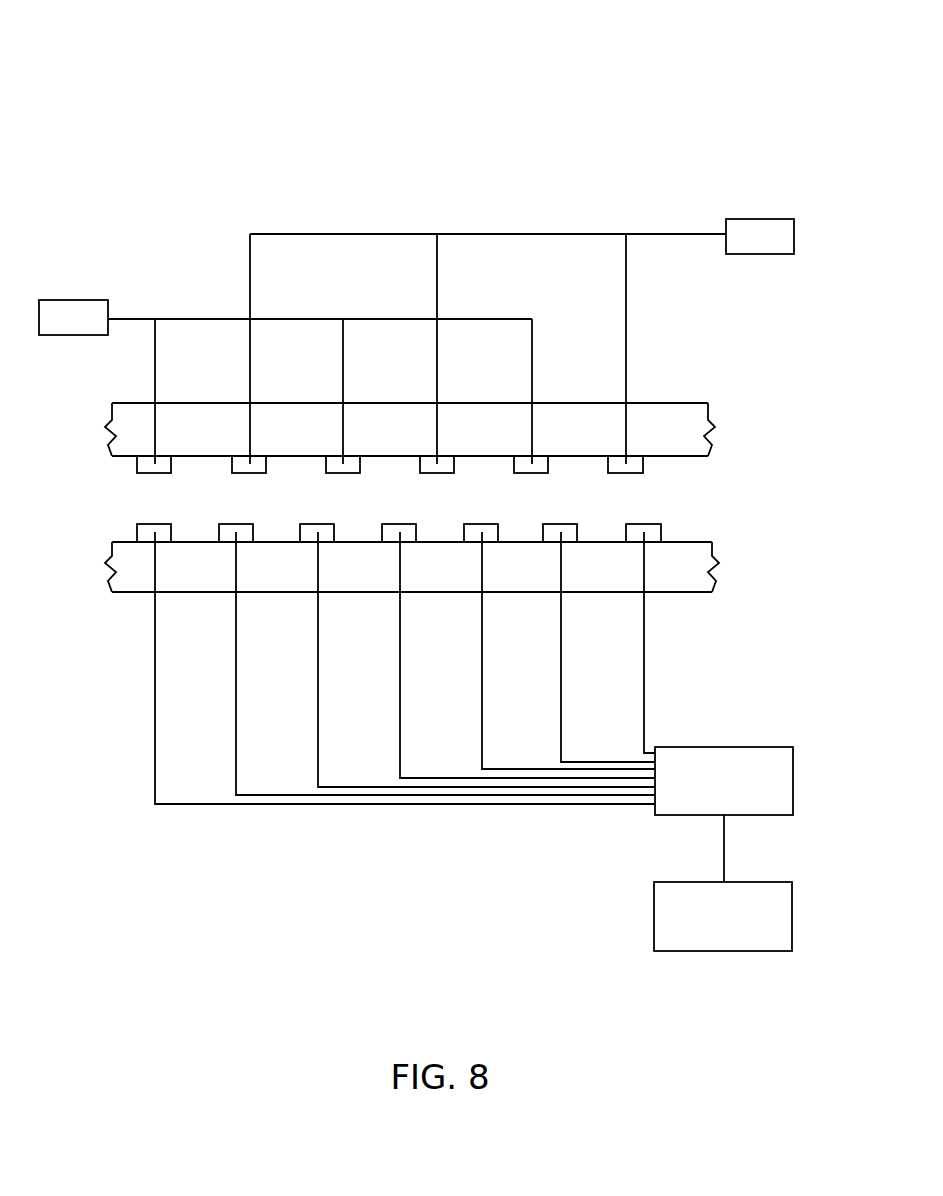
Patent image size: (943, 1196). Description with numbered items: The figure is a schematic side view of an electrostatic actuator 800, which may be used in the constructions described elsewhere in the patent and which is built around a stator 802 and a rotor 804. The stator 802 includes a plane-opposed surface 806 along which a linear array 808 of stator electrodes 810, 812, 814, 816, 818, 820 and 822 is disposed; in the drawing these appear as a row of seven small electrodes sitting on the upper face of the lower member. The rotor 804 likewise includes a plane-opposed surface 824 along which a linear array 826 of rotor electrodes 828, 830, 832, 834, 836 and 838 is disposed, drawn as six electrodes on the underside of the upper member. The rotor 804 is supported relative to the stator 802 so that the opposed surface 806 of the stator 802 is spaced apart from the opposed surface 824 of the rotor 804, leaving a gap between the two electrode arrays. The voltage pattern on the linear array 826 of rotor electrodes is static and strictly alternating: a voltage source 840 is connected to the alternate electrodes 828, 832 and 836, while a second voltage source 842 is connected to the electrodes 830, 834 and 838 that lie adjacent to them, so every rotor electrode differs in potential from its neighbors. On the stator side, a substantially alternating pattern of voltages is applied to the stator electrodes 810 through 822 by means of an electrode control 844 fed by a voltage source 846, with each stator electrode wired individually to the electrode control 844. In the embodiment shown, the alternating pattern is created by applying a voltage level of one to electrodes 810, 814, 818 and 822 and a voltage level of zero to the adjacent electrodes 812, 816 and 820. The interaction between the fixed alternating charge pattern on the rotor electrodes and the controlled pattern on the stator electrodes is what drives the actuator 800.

The electrostatic actuator 800 is at (314, 106).
The stator 802 is at (112, 580).
The rotor 804 is at (112, 414).
The plane-opposed surface 806 is at (120, 540).
The linear array of stator electrodes 808 is at (673, 531).
The stator electrode 810 is at (160, 545).
The stator electrode 812 is at (241, 545).
The stator electrode 814 is at (323, 545).
The stator electrode 816 is at (405, 545).
The stator electrode 818 is at (487, 545).
The stator electrode 820 is at (568, 545).
The stator electrode 822 is at (651, 545).
The plane-opposed surface 824 is at (121, 457).
The linear array of rotor electrodes 826 is at (673, 469).
The rotor electrode 828 is at (164, 447).
The rotor electrode 830 is at (258, 447).
The rotor electrode 832 is at (352, 447).
The rotor electrode 834 is at (446, 447).
The rotor electrode 836 is at (540, 447).
The rotor electrode 838 is at (635, 447).
The voltage source 840 is at (68, 300).
The voltage source 842 is at (774, 219).
The electrode control 844 is at (774, 747).
The voltage source 846 is at (758, 951).